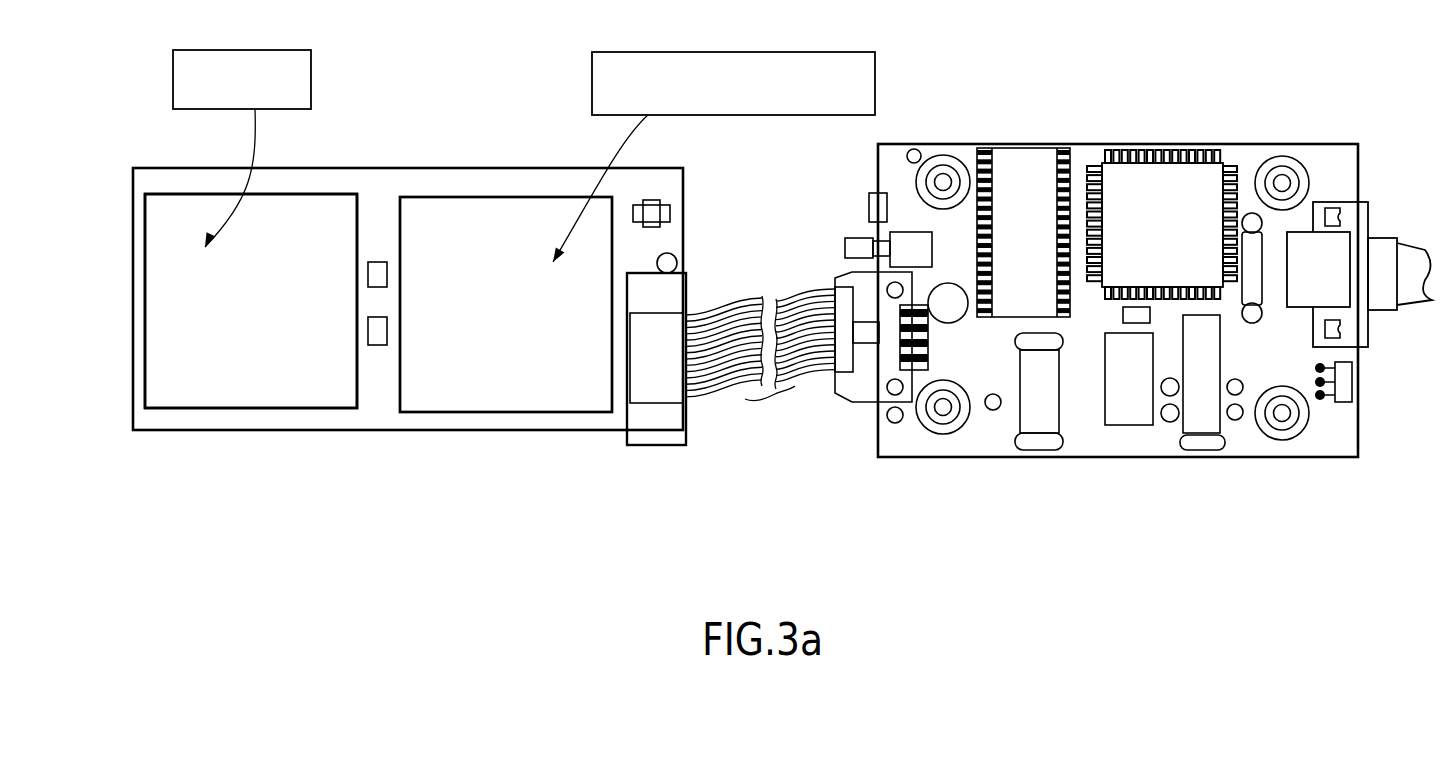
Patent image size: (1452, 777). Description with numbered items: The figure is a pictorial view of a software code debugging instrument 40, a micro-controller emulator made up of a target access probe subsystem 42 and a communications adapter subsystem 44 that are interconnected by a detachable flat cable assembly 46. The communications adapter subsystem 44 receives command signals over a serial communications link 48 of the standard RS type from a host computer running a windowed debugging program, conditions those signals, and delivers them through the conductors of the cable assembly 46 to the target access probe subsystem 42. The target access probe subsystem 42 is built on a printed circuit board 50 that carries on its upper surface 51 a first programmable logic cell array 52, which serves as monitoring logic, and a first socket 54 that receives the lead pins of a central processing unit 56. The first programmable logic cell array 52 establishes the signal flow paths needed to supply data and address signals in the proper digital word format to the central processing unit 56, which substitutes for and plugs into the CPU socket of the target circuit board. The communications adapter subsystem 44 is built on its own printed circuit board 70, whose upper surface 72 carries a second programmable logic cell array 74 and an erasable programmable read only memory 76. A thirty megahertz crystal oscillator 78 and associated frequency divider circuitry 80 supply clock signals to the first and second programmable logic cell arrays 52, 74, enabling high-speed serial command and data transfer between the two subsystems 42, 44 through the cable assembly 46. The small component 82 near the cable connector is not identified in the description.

The software code debugging instrument 40 is at (728, 488).
The target access probe subsystem 42 is at (412, 435).
The communications adapter subsystem 44 is at (928, 460).
The detachable flat cable assembly 46 is at (735, 305).
The RS-232 serial communications link 48 is at (1412, 257).
The printed circuit board 50 is at (350, 168).
The upper surface 51 is at (488, 187).
The first programmable logic cell array 52 is at (523, 412).
The first socket 54 is at (198, 408).
The central processing unit 56 is at (275, 386).
The printed circuit board 70 is at (945, 143).
The upper surface 72 is at (1080, 438).
The second programmable logic cell array 74 is at (1148, 170).
The erasable programmable read only memory 76 is at (1010, 160).
The crystal oscillator 78 is at (1133, 413).
The frequency divider circuitry 80 is at (1230, 447).
The connector component 82 is at (855, 238).